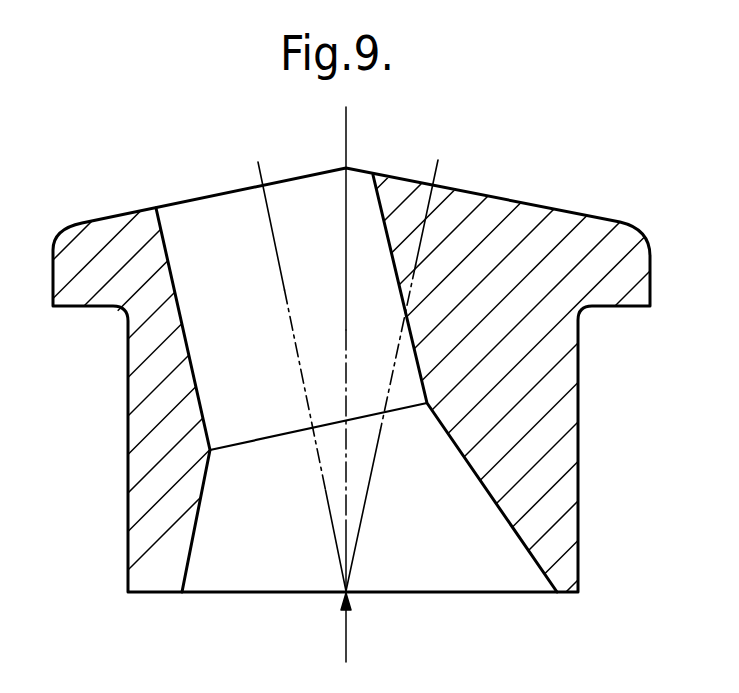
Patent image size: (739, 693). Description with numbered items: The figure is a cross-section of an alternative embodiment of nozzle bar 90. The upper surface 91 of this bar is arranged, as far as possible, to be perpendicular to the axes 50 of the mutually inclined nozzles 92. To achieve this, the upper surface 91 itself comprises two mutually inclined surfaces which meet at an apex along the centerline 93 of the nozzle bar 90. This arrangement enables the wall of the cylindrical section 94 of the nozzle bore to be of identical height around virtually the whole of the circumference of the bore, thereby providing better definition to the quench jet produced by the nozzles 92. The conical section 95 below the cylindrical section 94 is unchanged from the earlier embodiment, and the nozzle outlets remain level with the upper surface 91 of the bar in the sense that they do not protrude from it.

The nozzle axes 50 is at (437, 165).
The nozzle bar 90 is at (548, 233).
The upper surface 91 is at (490, 193).
The nozzles 92 is at (220, 214).
The centerline 93 is at (352, 637).
The cylindrical section 94 is at (257, 323).
The conical section 95 is at (289, 514).